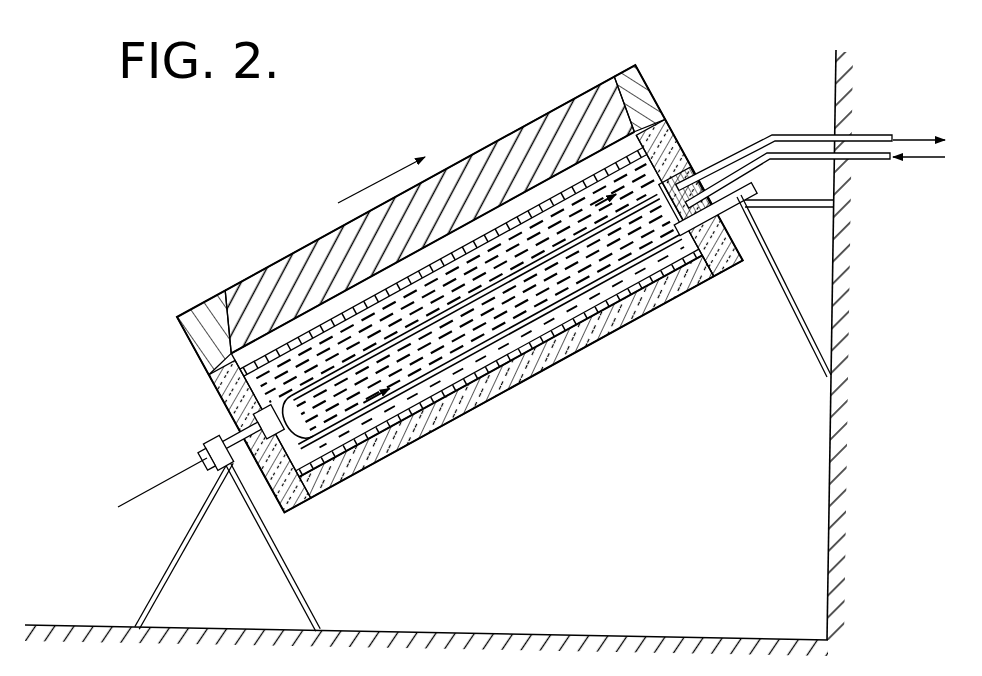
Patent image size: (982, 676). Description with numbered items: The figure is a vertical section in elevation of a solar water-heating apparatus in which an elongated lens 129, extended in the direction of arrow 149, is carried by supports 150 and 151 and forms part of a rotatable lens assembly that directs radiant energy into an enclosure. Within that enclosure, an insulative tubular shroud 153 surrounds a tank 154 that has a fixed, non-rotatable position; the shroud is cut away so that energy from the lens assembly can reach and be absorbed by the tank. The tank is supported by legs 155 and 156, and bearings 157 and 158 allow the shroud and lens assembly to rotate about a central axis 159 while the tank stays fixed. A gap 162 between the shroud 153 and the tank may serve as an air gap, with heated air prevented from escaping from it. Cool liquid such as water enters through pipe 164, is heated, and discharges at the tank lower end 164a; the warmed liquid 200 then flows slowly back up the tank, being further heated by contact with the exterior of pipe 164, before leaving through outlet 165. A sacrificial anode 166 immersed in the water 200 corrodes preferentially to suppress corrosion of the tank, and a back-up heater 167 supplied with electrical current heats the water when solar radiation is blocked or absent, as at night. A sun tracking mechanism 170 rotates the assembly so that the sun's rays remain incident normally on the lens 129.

The lens 129 is at (490, 146).
The arrow indicating direction of elongation 149 is at (357, 192).
The lens support 150 is at (178, 327).
The lens support 151 is at (646, 92).
The insulative tubular shroud 153 is at (523, 395).
The tank 154 is at (323, 340).
The leg 155 is at (143, 581).
The leg 156 is at (797, 336).
The bearing 157 is at (252, 413).
The bearing 158 is at (688, 180).
The central axis 159 is at (145, 492).
The gap 162 is at (423, 390).
The pipe 164 is at (405, 350).
The tank lower end discharge 164a is at (330, 417).
The outlet 165 is at (878, 137).
The sacrificial anode 166 is at (620, 186).
The back-up heater 167 is at (610, 280).
The sun tracking mechanism 170 is at (707, 222).
The warmed liquid 200 is at (372, 402).